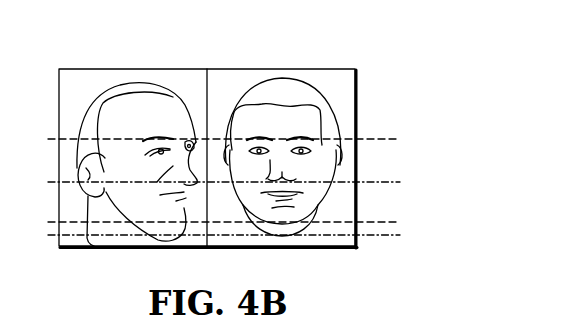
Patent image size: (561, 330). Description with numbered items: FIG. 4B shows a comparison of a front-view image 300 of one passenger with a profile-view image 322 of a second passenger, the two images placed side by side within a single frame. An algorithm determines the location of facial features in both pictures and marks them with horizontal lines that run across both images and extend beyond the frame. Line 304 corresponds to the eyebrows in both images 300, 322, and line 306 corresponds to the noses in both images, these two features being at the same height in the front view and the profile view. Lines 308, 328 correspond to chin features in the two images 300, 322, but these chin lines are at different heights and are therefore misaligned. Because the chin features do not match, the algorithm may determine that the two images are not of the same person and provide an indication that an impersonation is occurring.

The image 300 is at (255, 69).
The image 322 is at (108, 69).
The line 304 is at (378, 139).
The line 306 is at (385, 182).
The line 308 is at (385, 222).
The line 328 is at (385, 235).